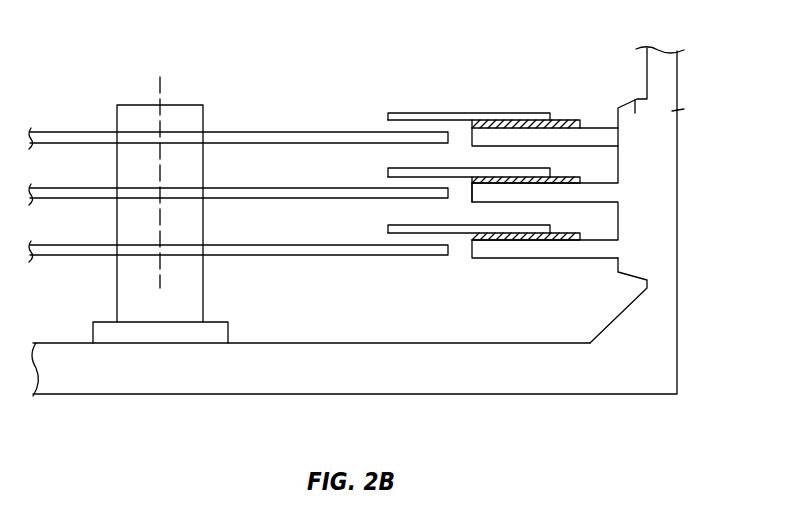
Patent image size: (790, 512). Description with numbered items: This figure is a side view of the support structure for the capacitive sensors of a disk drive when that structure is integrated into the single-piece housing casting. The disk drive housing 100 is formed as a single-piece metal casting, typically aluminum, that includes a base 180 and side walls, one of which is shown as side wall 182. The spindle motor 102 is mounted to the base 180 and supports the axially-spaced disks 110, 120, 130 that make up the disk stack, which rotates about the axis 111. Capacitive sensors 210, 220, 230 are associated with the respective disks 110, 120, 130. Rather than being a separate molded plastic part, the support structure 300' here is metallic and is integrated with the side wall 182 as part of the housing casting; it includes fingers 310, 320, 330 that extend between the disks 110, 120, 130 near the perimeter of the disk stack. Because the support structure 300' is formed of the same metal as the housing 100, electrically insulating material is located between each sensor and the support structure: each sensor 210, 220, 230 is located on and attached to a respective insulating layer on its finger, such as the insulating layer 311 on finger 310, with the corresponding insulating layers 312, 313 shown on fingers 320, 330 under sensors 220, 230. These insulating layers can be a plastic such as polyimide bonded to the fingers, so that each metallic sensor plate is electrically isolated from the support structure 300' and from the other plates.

The disk drive housing 100 is at (678, 346).
The spindle motor 102 is at (105, 321).
The disk 110 is at (240, 132).
The axis 111 is at (160, 94).
The disk 120 is at (240, 188).
The disk 130 is at (240, 245).
The base 180 is at (551, 395).
The side wall 182 is at (678, 110).
The capacitive sensor 210 is at (412, 113).
The capacitive sensor 220 is at (412, 168).
The capacitive sensor 230 is at (412, 225).
The support structure 300' is at (567, 63).
The finger 310 is at (599, 128).
The insulating layer 311 is at (569, 119).
The second insulating layer 312 is at (553, 176).
The third insulating layer 313 is at (553, 233).
The finger 320 is at (479, 205).
The finger 330 is at (599, 262).